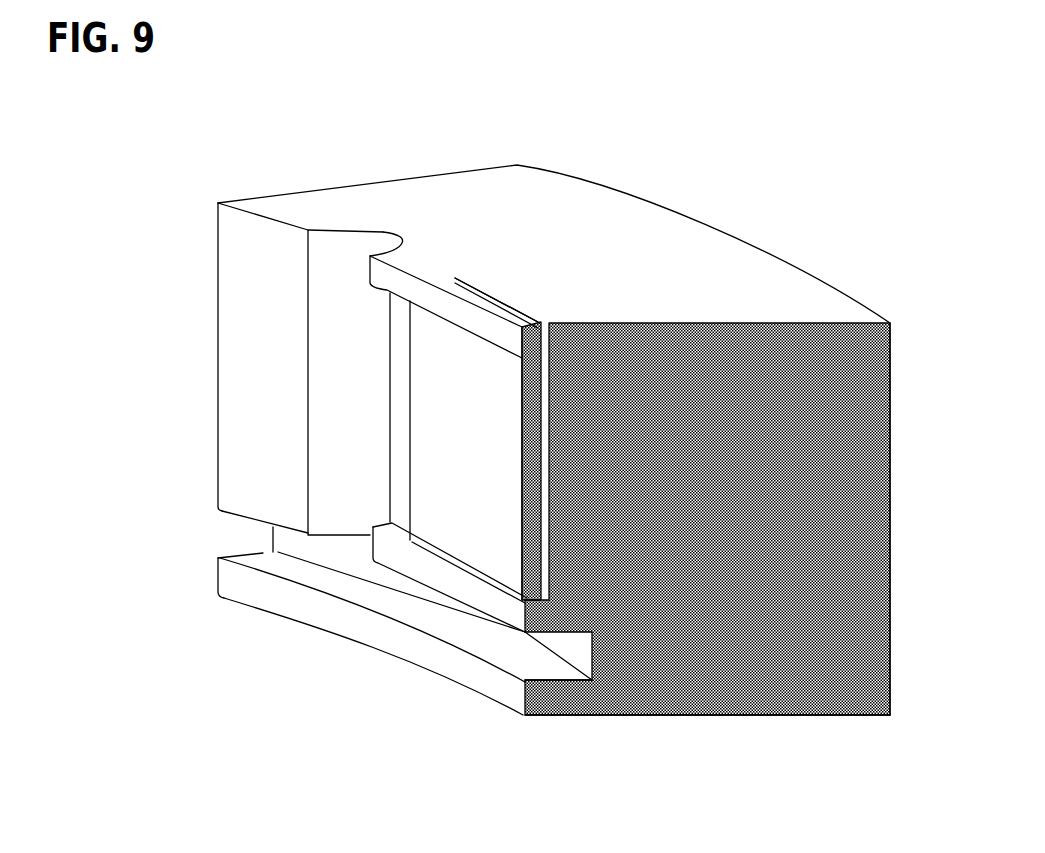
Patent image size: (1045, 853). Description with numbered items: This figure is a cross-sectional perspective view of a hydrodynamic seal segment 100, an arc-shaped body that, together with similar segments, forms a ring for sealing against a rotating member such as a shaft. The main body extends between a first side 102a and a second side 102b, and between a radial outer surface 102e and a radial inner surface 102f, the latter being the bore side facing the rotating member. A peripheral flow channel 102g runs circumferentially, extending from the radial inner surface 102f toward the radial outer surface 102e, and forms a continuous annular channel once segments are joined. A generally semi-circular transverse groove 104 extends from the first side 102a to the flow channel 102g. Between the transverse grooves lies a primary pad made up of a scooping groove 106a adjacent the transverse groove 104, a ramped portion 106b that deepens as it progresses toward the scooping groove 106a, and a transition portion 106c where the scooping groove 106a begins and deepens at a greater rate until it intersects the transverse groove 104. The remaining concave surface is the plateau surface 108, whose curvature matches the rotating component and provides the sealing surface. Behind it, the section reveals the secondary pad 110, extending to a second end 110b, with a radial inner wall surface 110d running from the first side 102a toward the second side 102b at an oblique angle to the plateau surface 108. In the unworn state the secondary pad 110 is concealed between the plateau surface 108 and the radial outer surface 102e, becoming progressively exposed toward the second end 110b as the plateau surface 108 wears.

The segment 100 is at (118, 170).
The first side 102a is at (755, 312).
The second side 102b is at (608, 715).
The radial outer surface 102e is at (885, 320).
The radial inner surface 102f is at (325, 605).
The flow channel 102g is at (312, 545).
The transverse groove 104 is at (355, 247).
The scooping groove 106a is at (403, 512).
The ramped portion 106b is at (478, 512).
The transition portion 106c is at (407, 440).
The plateau surface 108 is at (240, 458).
The secondary pad 110 is at (548, 333).
The second end 110b is at (455, 278).
The radial inner wall surface 110d is at (518, 303).